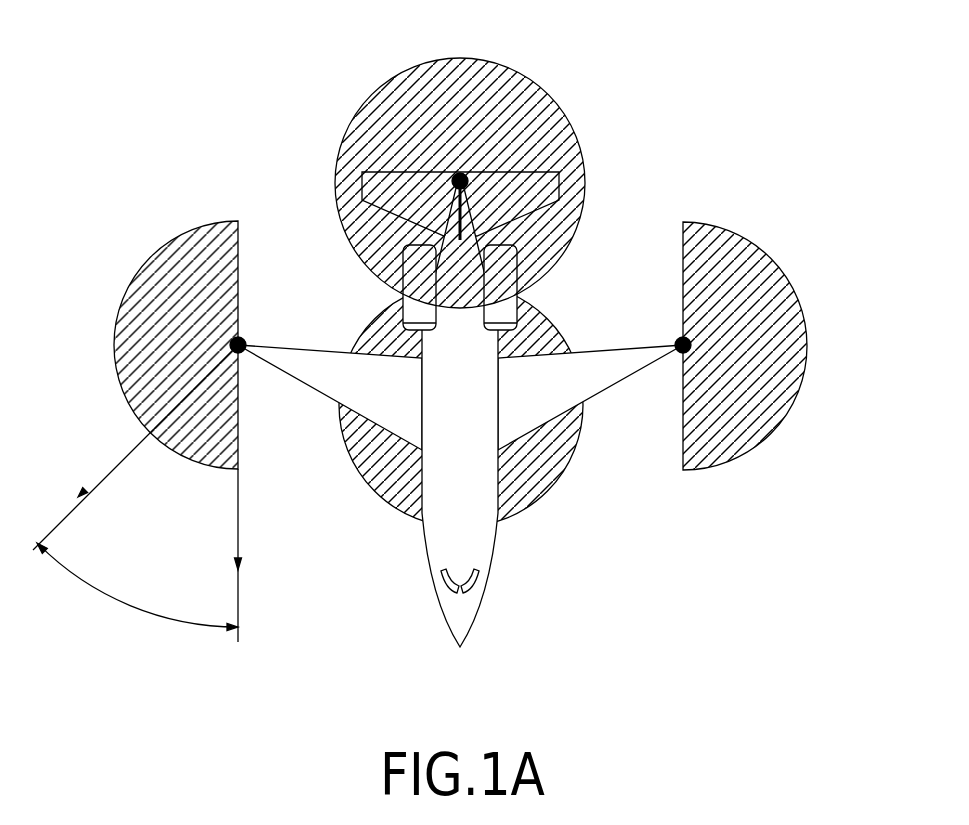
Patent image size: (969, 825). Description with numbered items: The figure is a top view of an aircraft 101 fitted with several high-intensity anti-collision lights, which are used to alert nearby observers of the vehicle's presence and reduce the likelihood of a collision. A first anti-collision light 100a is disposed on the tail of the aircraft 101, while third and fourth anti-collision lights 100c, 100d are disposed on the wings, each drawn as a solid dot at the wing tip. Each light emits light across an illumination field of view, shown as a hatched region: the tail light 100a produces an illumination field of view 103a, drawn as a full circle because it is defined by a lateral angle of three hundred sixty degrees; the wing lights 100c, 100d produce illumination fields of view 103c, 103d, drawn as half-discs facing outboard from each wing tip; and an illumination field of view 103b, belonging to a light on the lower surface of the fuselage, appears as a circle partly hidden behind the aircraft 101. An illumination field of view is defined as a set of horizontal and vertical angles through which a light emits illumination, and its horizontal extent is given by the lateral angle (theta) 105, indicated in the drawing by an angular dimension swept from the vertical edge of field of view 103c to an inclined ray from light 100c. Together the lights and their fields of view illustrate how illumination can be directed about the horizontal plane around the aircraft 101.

The aircraft 101 is at (172, 47).
The first anti-collision light 100a is at (457, 174).
The third anti-collision light 100c is at (241, 338).
The fourth anti-collision light 100d is at (681, 338).
The illumination field of view 103a is at (534, 83).
The illumination field of view 103b is at (531, 500).
The illumination field of view 103c is at (142, 268).
The illumination field of view 103d is at (782, 268).
The lateral angle 105 is at (120, 604).